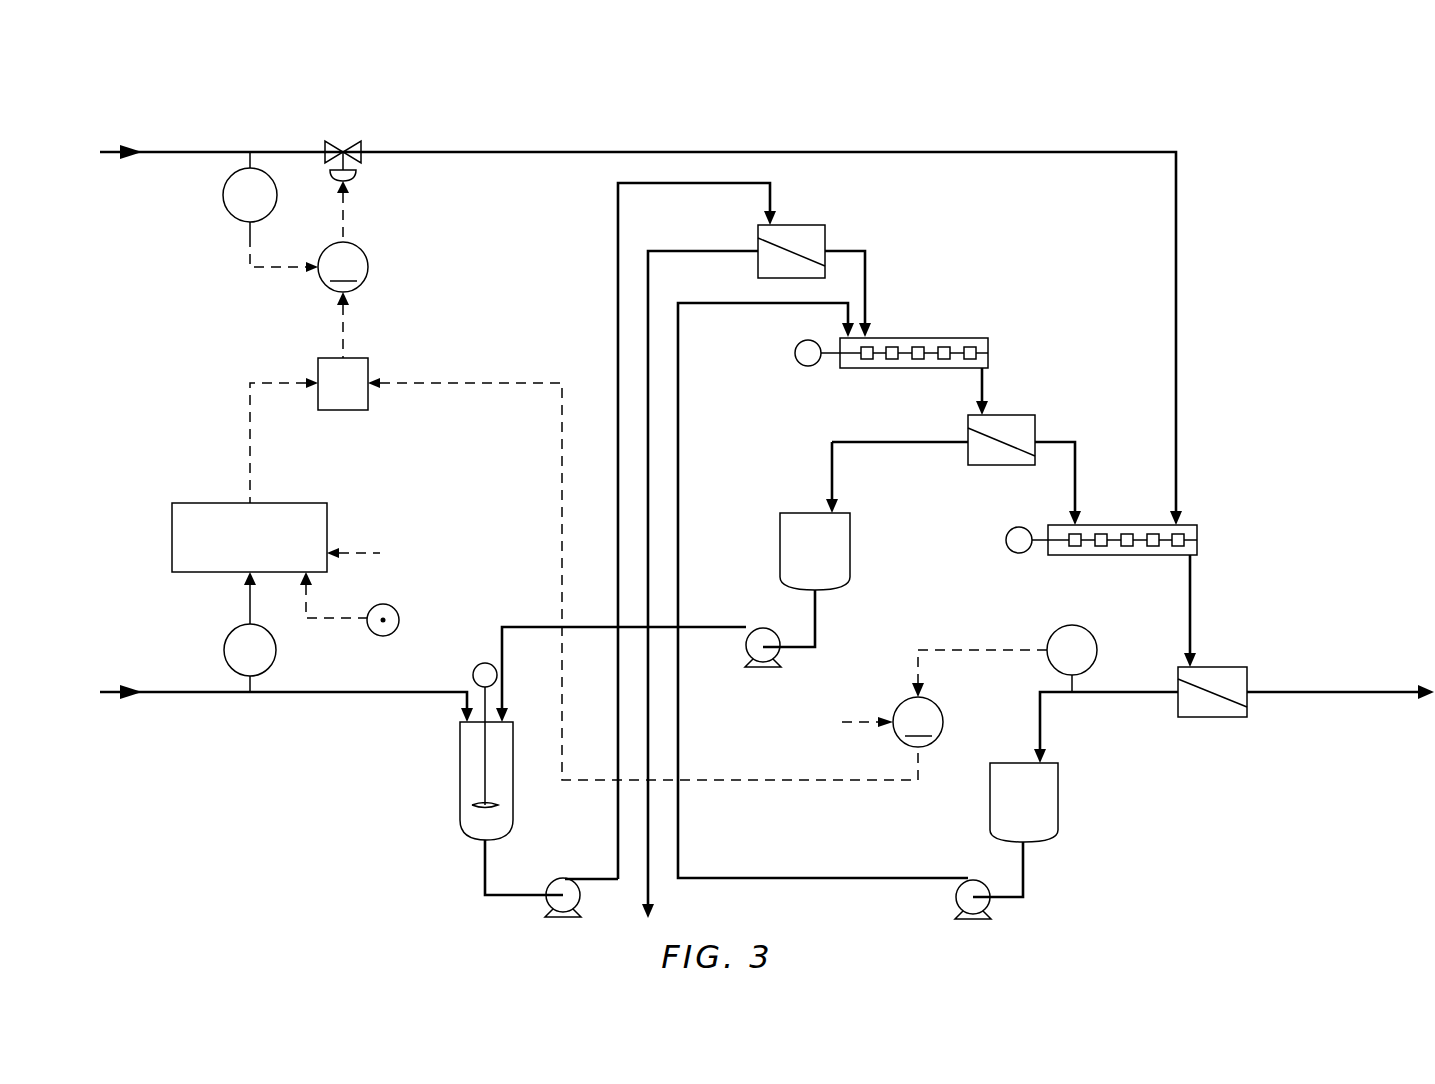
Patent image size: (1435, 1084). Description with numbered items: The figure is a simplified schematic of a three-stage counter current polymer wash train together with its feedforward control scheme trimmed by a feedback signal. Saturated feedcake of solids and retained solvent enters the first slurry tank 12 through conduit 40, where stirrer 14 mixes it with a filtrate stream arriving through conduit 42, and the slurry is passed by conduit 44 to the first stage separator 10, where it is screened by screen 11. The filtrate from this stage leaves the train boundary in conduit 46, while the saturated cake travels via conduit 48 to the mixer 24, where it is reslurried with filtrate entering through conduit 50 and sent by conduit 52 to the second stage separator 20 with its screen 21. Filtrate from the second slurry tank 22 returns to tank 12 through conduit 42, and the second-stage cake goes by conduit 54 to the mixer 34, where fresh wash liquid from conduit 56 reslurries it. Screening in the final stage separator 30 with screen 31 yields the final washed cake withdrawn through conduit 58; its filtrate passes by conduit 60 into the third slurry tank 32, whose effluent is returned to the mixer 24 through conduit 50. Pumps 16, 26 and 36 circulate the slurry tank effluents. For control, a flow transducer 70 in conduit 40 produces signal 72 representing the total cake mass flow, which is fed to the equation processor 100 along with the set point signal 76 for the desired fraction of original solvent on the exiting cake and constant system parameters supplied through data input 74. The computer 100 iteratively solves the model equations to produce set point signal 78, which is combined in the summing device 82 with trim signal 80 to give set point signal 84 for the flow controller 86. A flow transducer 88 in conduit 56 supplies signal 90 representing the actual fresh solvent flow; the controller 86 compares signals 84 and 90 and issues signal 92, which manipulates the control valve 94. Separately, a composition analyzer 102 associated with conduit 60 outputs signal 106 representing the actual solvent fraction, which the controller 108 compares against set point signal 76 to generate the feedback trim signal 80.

The first stage separator 10 is at (812, 225).
The screen 11 is at (815, 262).
The first slurry tank 12 is at (460, 797).
The stirrer 14 is at (481, 663).
The pump 16 is at (557, 880).
The second stage separator 20 is at (1023, 415).
The screen 21 is at (1005, 452).
The second slurry tank 22 is at (850, 540).
The mixer 24 is at (988, 342).
The pump 26 is at (745, 657).
The final stage separator 30 is at (1228, 667).
The screen 31 is at (1224, 705).
The third slurry tank 32 is at (1058, 812).
The mixer 34 is at (1197, 533).
The pump 36 is at (990, 905).
The conduit 40 is at (372, 695).
The conduit 42 is at (722, 627).
The conduit 44 is at (618, 226).
The conduit 46 is at (683, 251).
The conduit 48 is at (866, 272).
The conduit 50 is at (678, 393).
The conduit 52 is at (982, 385).
The conduit 54 is at (1075, 452).
The conduit 56 is at (205, 151).
The conduit 58 is at (1322, 692).
The conduit 60 is at (1115, 694).
The flow transducer 70 is at (224, 650).
The output signal 72 is at (250, 612).
The data input 74 is at (340, 618).
The set point signal 76 is at (360, 548).
The set point signal 78 is at (250, 415).
The output signal 80 is at (504, 383).
The summing device 82 is at (358, 410).
The set point signal 84 is at (343, 327).
The flow controller 86 is at (368, 267).
The flow transducer 88 is at (225, 205).
The output signal 90 is at (250, 270).
The output signal 92 is at (343, 207).
The control valve 94 is at (343, 141).
The equation processor 100 is at (172, 530).
The composition analyzer 102 is at (1094, 640).
The output signal 106 is at (963, 650).
The controller 108 is at (943, 722).